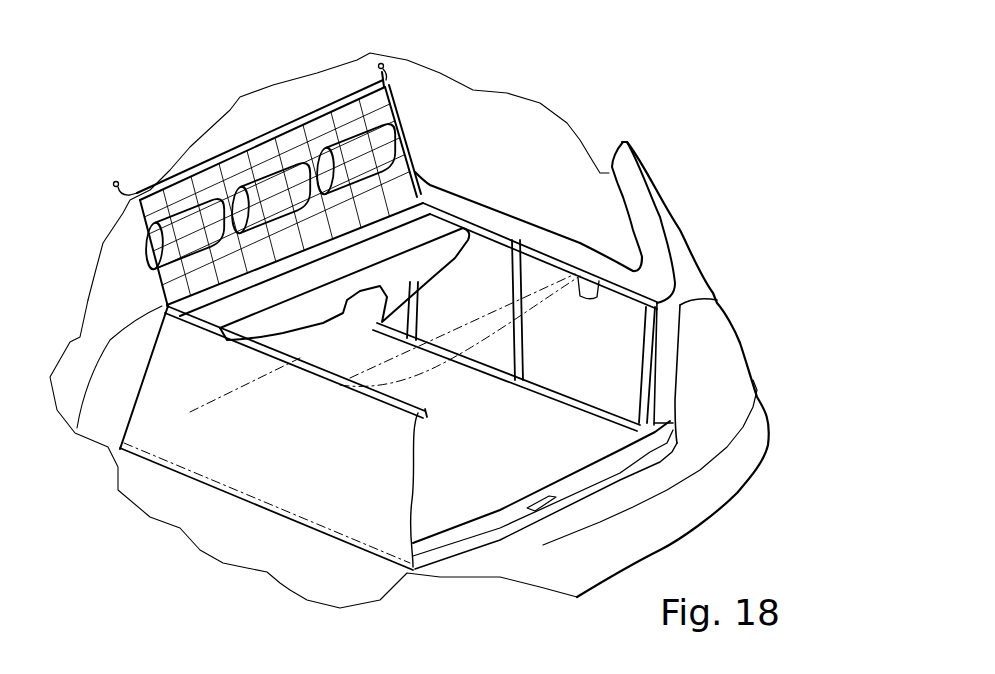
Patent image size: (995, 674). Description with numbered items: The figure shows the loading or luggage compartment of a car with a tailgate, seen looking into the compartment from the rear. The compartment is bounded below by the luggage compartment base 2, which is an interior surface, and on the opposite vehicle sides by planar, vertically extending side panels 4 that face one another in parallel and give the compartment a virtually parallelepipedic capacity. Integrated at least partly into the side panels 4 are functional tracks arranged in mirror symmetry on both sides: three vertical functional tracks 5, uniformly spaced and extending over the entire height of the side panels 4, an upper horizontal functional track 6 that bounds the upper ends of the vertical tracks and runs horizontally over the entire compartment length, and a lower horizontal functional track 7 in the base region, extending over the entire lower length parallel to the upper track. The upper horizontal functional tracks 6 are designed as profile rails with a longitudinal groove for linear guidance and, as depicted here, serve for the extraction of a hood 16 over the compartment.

The luggage compartment base 2 is at (466, 475).
The side panels 4 is at (578, 381).
The vertical functional tracks 5 is at (517, 284).
The upper horizontal functional track 6 is at (520, 240).
The lower horizontal functional track 7 is at (527, 385).
The hood 16 is at (263, 320).